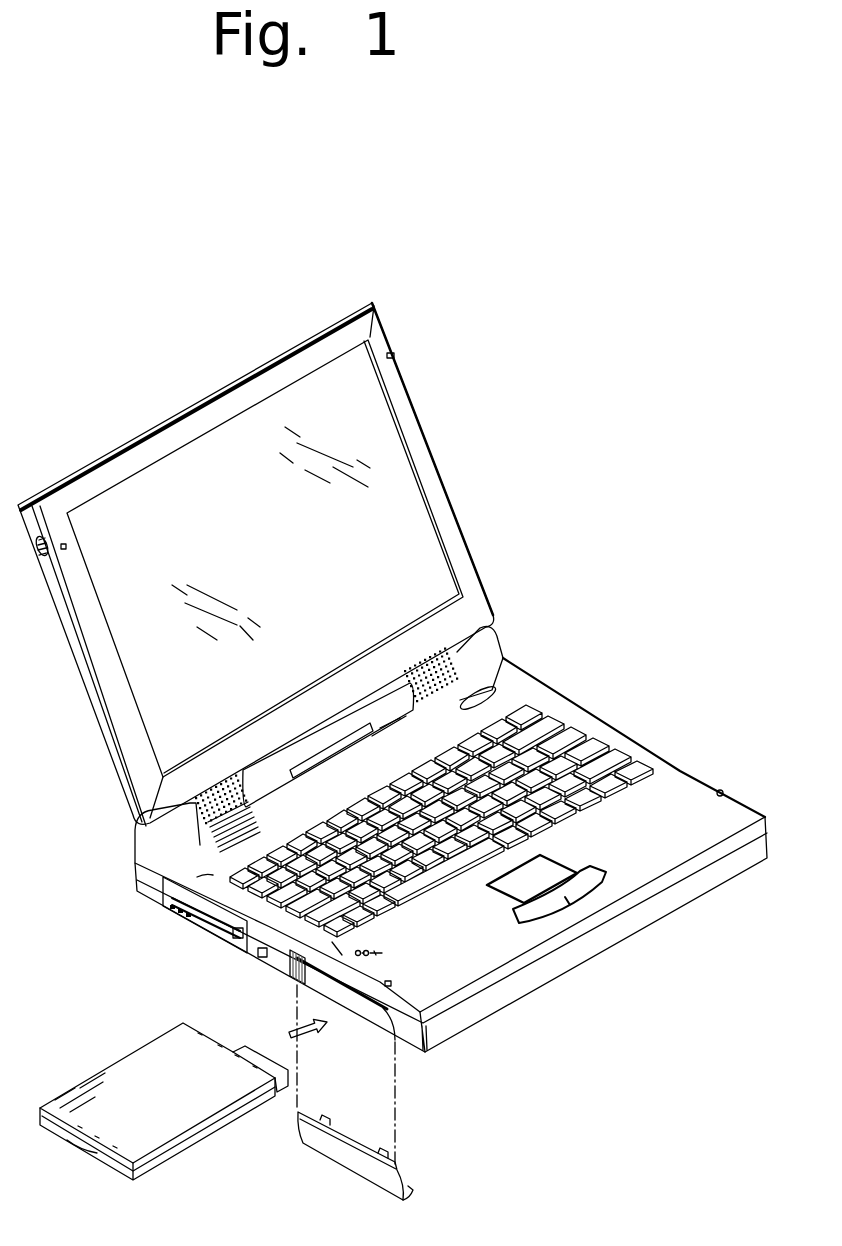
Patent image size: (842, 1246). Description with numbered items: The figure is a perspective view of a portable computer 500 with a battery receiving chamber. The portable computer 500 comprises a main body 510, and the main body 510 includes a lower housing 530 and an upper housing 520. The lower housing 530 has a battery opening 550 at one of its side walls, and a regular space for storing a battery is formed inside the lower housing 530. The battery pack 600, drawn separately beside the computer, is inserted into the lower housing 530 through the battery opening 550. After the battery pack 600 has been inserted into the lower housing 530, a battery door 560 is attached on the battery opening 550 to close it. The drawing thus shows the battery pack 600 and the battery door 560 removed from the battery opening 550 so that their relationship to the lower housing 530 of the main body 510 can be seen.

The portable computer 500 is at (712, 410).
The main body 510 is at (163, 931).
The upper housing 520 is at (465, 973).
The lower housing 530 is at (443, 1033).
The battery opening 550 is at (362, 1008).
The battery door 560 is at (350, 1153).
The battery pack 600 is at (183, 1117).